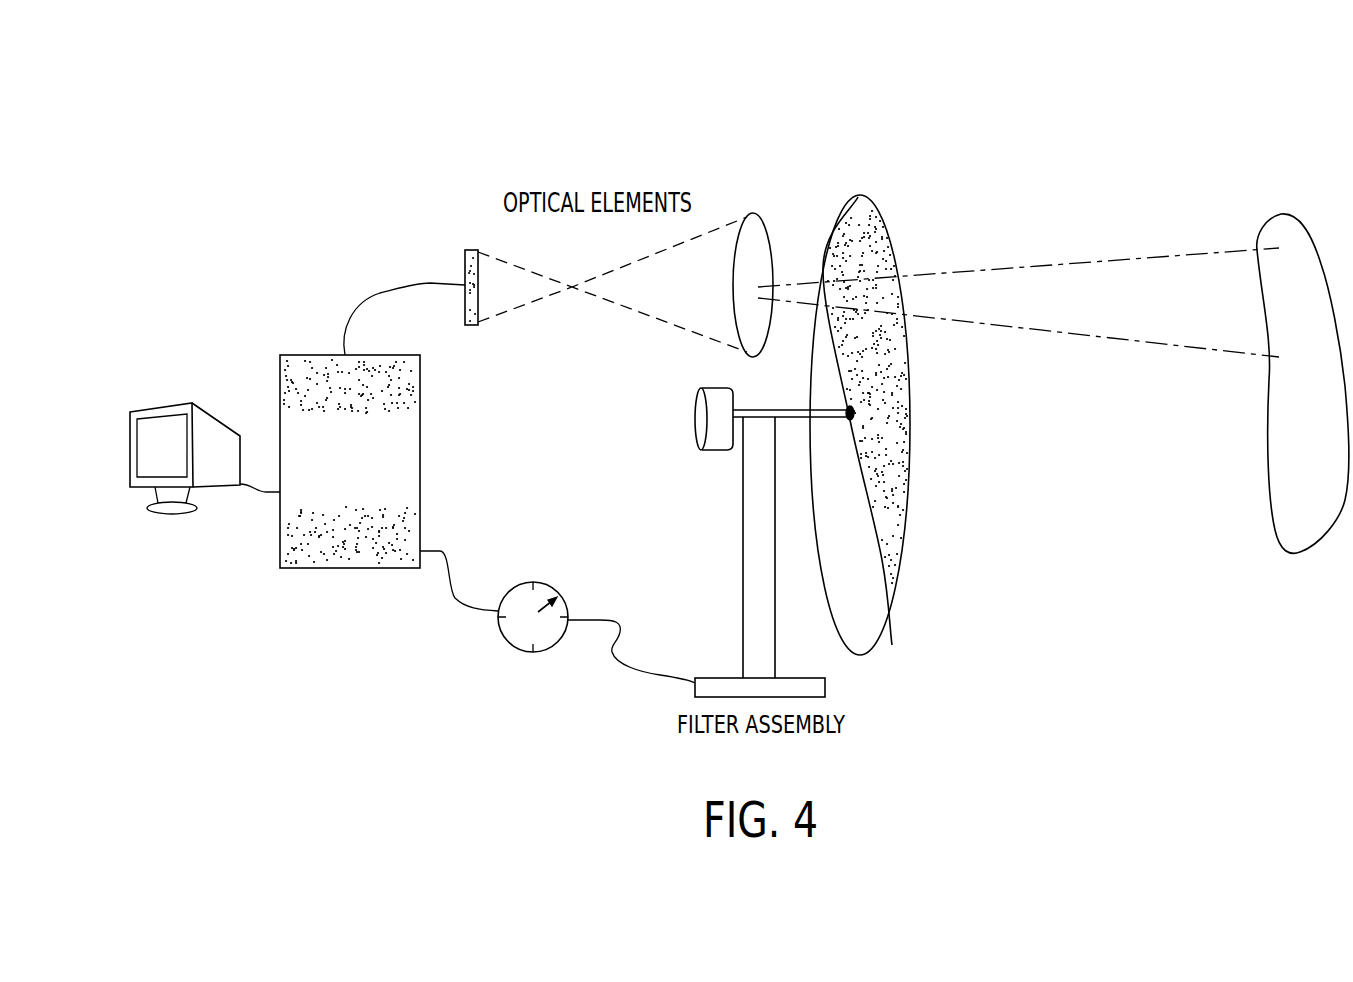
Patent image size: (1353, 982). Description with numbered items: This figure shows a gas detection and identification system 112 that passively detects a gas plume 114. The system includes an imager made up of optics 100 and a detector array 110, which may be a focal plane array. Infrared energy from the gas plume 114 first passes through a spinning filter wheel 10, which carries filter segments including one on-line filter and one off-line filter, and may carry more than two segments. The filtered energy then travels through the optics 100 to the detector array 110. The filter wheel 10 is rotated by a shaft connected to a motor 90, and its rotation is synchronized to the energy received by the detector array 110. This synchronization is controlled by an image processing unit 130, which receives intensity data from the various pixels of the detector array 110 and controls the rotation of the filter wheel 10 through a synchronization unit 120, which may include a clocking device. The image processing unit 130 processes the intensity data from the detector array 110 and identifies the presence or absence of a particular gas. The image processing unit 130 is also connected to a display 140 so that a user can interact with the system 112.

The gas detection and identification system 112 is at (412, 141).
The image processing unit 130 is at (303, 378).
The display 140 is at (178, 515).
The detector array 110 is at (465, 258).
The optics 100 is at (762, 214).
The filter wheel 10 is at (872, 203).
The motor 90 is at (695, 398).
The synchronization unit 120 is at (518, 636).
The gas plume 114 is at (1280, 247).